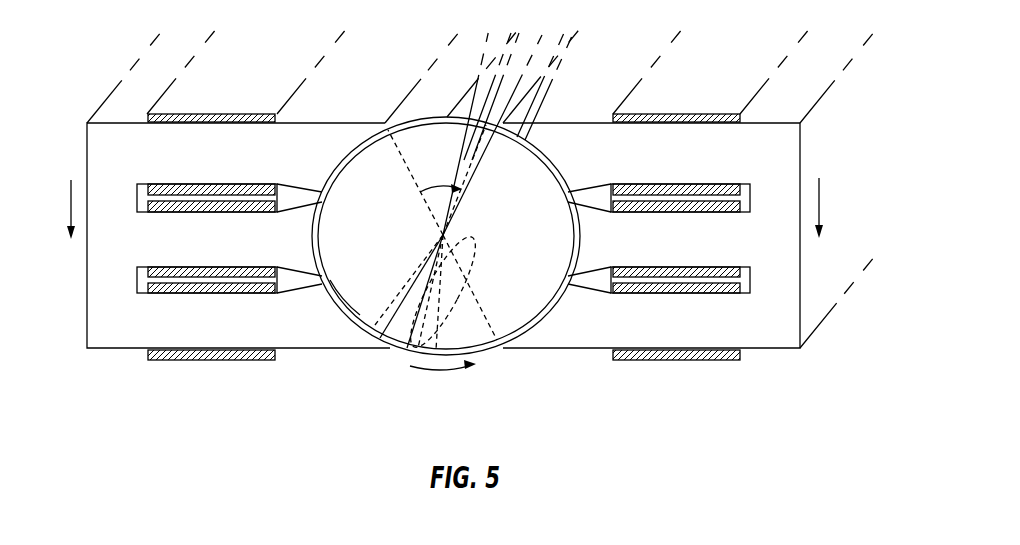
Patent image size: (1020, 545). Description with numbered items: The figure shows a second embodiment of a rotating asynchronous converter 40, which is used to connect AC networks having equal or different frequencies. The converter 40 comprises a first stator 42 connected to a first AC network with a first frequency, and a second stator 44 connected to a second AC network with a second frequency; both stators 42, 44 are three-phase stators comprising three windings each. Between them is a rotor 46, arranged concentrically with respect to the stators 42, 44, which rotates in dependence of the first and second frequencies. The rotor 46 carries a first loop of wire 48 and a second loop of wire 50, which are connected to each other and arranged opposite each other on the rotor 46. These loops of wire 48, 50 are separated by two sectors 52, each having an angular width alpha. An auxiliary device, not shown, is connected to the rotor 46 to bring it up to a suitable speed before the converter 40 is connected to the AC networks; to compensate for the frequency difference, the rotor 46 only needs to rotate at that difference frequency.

The rotating asynchronous converter 40 is at (430, 396).
The first stator 42 is at (105, 351).
The second stator 44 is at (775, 349).
The rotor 46 is at (388, 362).
The first loop of wire 48 is at (513, 312).
The second loop of wire 50 is at (352, 302).
The sector 52 is at (523, 387).